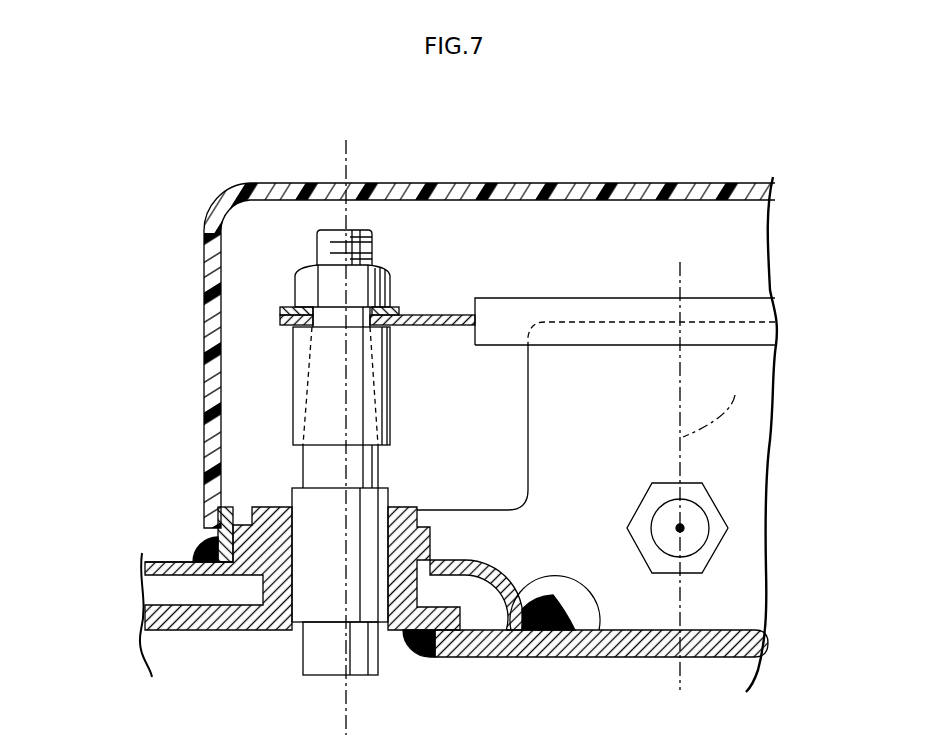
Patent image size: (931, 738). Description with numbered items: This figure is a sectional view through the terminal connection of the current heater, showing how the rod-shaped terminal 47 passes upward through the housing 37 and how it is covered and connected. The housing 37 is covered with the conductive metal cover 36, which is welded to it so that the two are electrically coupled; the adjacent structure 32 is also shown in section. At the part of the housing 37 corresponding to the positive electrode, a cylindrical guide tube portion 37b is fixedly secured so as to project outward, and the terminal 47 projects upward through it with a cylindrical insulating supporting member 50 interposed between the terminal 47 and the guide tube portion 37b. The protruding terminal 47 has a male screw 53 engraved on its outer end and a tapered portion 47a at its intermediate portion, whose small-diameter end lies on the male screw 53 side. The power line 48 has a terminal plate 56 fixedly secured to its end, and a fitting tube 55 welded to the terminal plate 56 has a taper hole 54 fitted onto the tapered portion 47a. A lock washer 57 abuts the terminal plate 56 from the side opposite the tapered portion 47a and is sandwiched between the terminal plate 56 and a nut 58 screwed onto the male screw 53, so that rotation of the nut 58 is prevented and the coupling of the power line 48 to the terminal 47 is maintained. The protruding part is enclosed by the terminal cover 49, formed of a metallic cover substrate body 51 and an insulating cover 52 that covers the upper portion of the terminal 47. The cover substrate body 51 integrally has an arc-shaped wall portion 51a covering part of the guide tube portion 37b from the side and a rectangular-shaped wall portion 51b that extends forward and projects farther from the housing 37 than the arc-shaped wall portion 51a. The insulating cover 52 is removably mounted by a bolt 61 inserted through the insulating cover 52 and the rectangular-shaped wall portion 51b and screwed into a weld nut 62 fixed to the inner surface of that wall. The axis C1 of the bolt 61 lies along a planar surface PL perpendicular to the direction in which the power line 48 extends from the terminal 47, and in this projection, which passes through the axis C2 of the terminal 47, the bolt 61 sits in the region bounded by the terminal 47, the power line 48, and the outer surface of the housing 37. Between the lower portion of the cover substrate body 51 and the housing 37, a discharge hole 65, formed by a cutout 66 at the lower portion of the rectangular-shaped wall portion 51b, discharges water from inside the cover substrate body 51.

The case member 32 is at (742, 634).
The cover 36 is at (168, 561).
The housing 37 is at (217, 626).
The guide tube portion 37b is at (478, 552).
The terminal 47 is at (353, 402).
The tapered portion 47a is at (305, 410).
The power line 48 is at (623, 348).
The terminal cover 49 is at (399, 372).
The supporting member 50 is at (323, 502).
The cover substrate body 51 is at (208, 520).
The arc-shaped wall portion 51a is at (452, 525).
The rectangular-shaped wall portion 51b is at (593, 320).
The insulating cover 52 is at (213, 383).
The male screw 53 is at (363, 248).
The taper hole 54 is at (367, 397).
The fitting tube 55 is at (388, 381).
The terminal plate 56 is at (282, 322).
The lock washer 57 is at (400, 318).
The nut 58 is at (388, 288).
The bolt 61 is at (658, 540).
The weld nut 62 is at (698, 490).
The discharge hole 65 is at (558, 602).
The cutout 66 is at (578, 606).
The axis of the bolt C1 is at (684, 527).
The axis of the terminal C2 is at (340, 643).
The planar surface PL is at (717, 401).